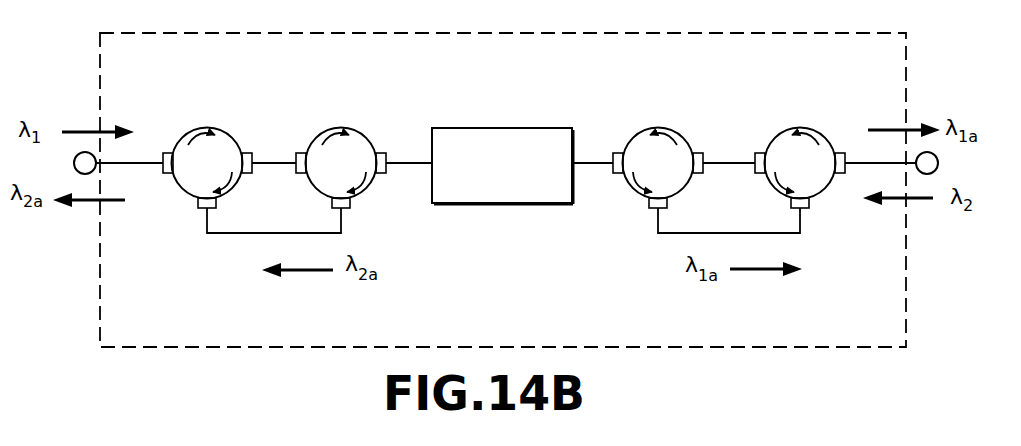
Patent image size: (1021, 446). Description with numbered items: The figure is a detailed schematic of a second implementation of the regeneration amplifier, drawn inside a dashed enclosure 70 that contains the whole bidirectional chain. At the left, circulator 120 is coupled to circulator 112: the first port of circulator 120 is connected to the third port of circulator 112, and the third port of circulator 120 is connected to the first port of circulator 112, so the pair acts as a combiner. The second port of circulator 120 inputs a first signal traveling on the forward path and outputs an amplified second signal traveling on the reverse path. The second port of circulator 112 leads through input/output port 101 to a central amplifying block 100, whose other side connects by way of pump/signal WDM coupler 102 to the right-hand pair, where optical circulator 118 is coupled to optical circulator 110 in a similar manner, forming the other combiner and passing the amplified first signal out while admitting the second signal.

The optical add/drop module 70 is at (290, 33).
The optical circulator 120 is at (222, 128).
The optical circulator 112 is at (355, 128).
The input/output port 101 is at (410, 163).
The optical device 100 is at (545, 128).
The pump/signal WDM coupler 102 is at (597, 163).
The optical circulator 110 is at (668, 128).
The optical circulator 118 is at (812, 128).